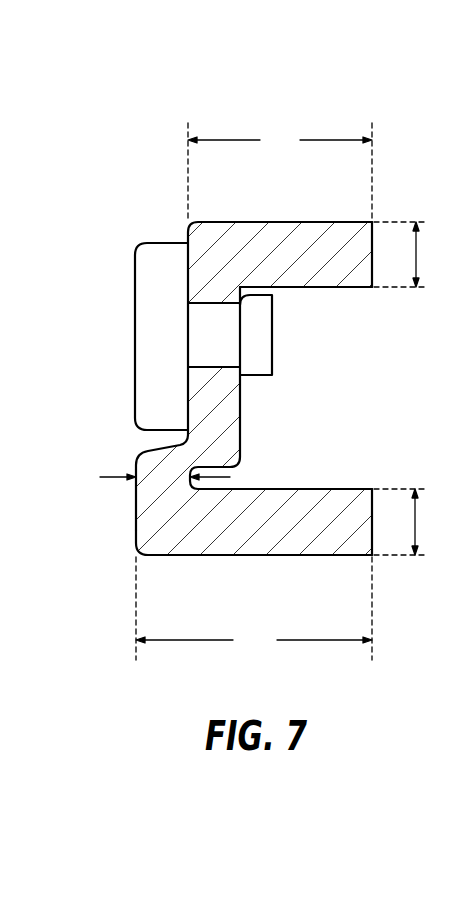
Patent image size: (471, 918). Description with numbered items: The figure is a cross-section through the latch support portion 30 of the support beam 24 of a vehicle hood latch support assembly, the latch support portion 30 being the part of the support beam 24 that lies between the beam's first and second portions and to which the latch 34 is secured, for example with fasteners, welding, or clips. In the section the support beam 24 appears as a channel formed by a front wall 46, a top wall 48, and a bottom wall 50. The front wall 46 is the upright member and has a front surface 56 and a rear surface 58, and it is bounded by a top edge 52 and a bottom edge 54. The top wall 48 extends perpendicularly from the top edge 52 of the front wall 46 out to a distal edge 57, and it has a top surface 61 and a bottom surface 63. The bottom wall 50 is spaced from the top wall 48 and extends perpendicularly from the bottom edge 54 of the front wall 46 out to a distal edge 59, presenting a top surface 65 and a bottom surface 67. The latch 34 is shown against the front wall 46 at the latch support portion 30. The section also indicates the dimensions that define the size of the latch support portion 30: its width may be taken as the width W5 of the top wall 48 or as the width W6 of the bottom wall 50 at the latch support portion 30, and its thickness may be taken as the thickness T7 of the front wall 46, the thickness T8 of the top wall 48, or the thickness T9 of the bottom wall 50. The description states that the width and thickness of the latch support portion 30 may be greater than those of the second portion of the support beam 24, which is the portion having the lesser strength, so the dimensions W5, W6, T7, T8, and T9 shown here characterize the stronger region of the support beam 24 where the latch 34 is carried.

The support beam 24 is at (235, 353).
The latch support portion 30 is at (235, 391).
The latch 34 is at (134, 292).
The front wall 46 is at (163, 481).
The top wall 48 is at (272, 237).
The bottom wall 50 is at (272, 545).
The top edge 52 is at (192, 226).
The bottom edge 54 is at (141, 554).
The front surface 56 is at (138, 450).
The distal edge 57 is at (373, 221).
The rear surface 58 is at (241, 441).
The distal edge 59 is at (373, 556).
The top surface 61 is at (323, 221).
The bottom surface 63 is at (318, 288).
The top surface 65 is at (318, 489).
The bottom surface 67 is at (318, 556).
The width of the top wall W5 is at (280, 172).
The width of the bottom wall W6 is at (254, 608).
The thickness of the front wall T7 is at (150, 478).
The thickness of the top wall T8 is at (417, 258).
The thickness of the bottom wall T9 is at (417, 527).